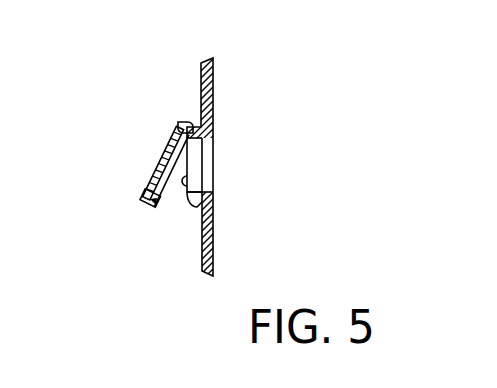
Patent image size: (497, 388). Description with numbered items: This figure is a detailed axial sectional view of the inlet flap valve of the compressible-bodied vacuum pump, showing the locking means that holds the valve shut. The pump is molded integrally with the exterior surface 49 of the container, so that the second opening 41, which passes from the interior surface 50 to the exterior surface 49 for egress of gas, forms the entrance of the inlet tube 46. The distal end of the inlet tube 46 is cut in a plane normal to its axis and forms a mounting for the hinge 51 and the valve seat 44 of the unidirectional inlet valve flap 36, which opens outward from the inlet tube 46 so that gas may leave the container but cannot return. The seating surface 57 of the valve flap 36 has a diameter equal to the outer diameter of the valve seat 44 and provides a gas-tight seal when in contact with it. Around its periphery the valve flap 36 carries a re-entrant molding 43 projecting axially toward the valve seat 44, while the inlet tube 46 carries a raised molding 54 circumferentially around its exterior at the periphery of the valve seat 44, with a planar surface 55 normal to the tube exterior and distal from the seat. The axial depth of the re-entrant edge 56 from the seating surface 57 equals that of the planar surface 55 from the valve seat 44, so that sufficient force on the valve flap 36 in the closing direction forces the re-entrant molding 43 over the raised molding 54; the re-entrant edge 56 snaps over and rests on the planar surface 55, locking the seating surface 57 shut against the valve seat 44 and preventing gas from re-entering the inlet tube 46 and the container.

The unidirectional inlet valve flap 36 is at (177, 132).
The second opening 41 is at (213, 148).
The re-entrant molding 43 is at (140, 205).
The valve seat 44 is at (203, 148).
The inlet tube 46 is at (213, 138).
The exterior surface 49 is at (201, 240).
The interior surface 50 is at (213, 253).
The hinge 51 is at (181, 136).
The raised molding 54 is at (190, 183).
The planar surface 55 is at (197, 212).
The re-entrant edge 56 is at (147, 181).
The seating surface 57 is at (155, 170).